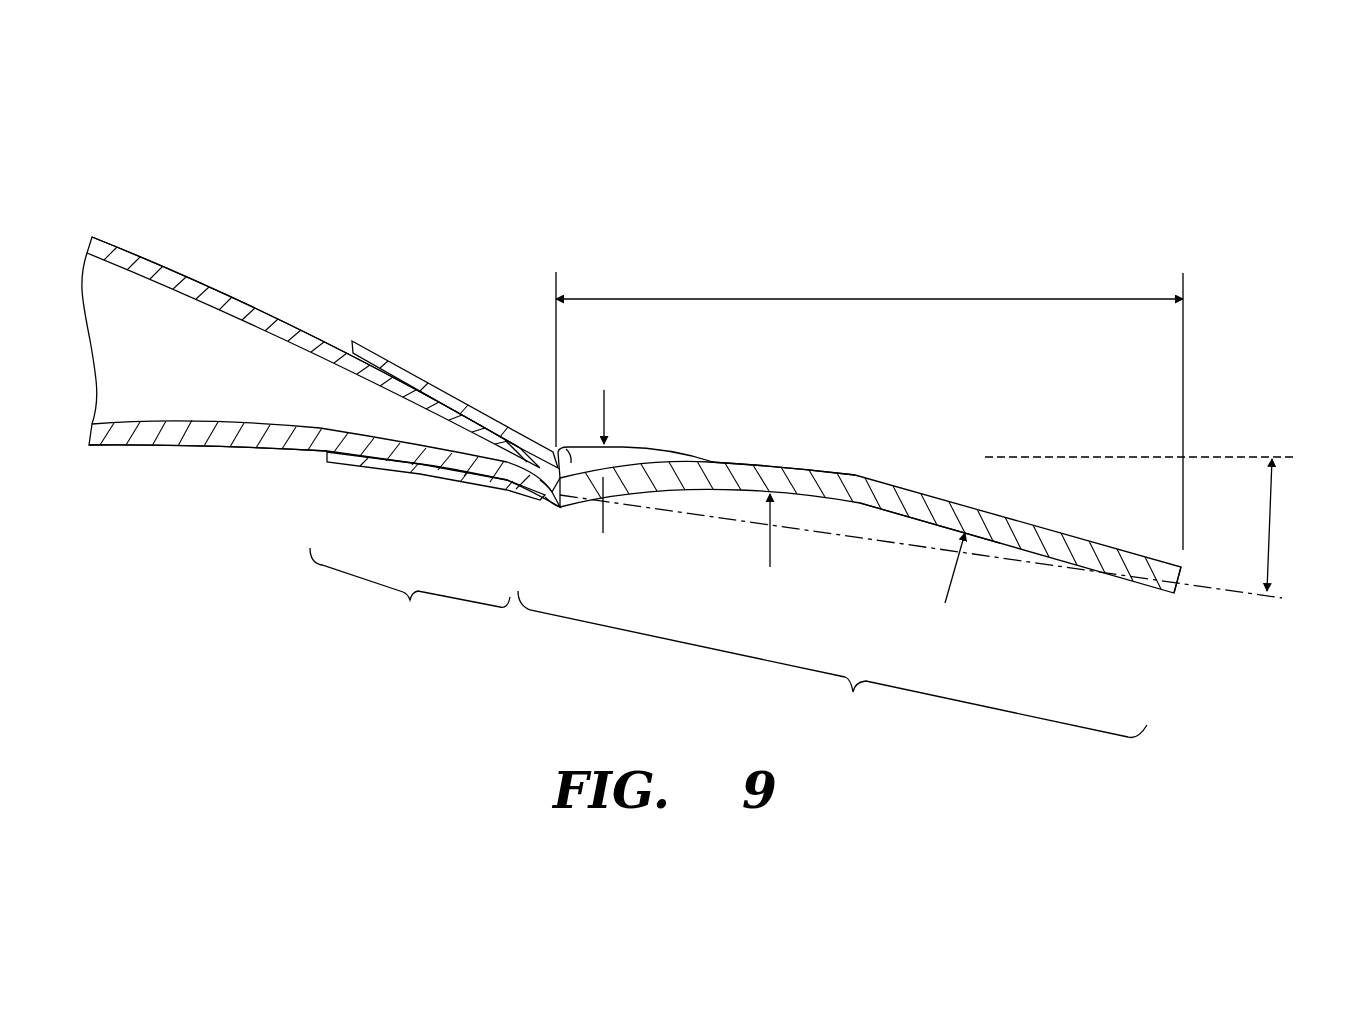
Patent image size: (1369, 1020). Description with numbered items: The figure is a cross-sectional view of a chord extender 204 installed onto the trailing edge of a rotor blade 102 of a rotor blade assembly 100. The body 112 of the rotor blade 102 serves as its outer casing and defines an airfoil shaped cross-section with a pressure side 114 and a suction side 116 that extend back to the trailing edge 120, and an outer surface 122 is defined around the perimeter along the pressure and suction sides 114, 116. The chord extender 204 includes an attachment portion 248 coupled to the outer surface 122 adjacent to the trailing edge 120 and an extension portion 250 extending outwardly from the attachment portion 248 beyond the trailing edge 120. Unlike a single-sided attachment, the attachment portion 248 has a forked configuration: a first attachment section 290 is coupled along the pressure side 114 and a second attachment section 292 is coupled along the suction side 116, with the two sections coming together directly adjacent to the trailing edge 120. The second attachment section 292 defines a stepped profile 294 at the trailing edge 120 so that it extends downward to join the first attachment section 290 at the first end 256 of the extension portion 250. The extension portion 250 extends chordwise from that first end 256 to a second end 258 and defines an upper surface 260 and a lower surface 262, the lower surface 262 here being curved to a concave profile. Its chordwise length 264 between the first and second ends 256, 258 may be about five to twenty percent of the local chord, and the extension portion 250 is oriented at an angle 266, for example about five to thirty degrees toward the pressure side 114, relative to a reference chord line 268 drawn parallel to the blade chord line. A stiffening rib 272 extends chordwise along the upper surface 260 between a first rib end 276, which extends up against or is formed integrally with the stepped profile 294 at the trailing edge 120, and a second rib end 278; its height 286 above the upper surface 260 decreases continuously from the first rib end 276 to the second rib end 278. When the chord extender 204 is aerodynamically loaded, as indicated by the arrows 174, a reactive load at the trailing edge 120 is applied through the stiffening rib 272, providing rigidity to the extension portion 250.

The rotor blade assembly 100 is at (792, 188).
The rotor blade 102 is at (172, 210).
The body 112 is at (178, 268).
The pressure side 114 is at (148, 447).
The suction side 116 is at (262, 310).
The trailing edge 120 is at (512, 440).
The outer surface 122 is at (220, 447).
The arrows 174 is at (770, 555).
The chord extender 204 is at (1027, 260).
The attachment portion 248 is at (410, 593).
The extension portion 250 is at (832, 664).
The first end 256 is at (560, 507).
The second end 258 is at (1180, 585).
The upper surface 260 is at (835, 470).
The lower surface 262 is at (883, 509).
The chordwise length 264 is at (868, 298).
The angle 266 is at (1274, 527).
The reference chord line 268 is at (1068, 457).
The stiffening rib 272 is at (641, 446).
The first rib end 276 is at (565, 450).
The second rib end 278 is at (714, 462).
The height 286 is at (605, 520).
The first attachment section 290 is at (410, 472).
The second attachment section 292 is at (417, 375).
The stepped profile 294 is at (535, 495).